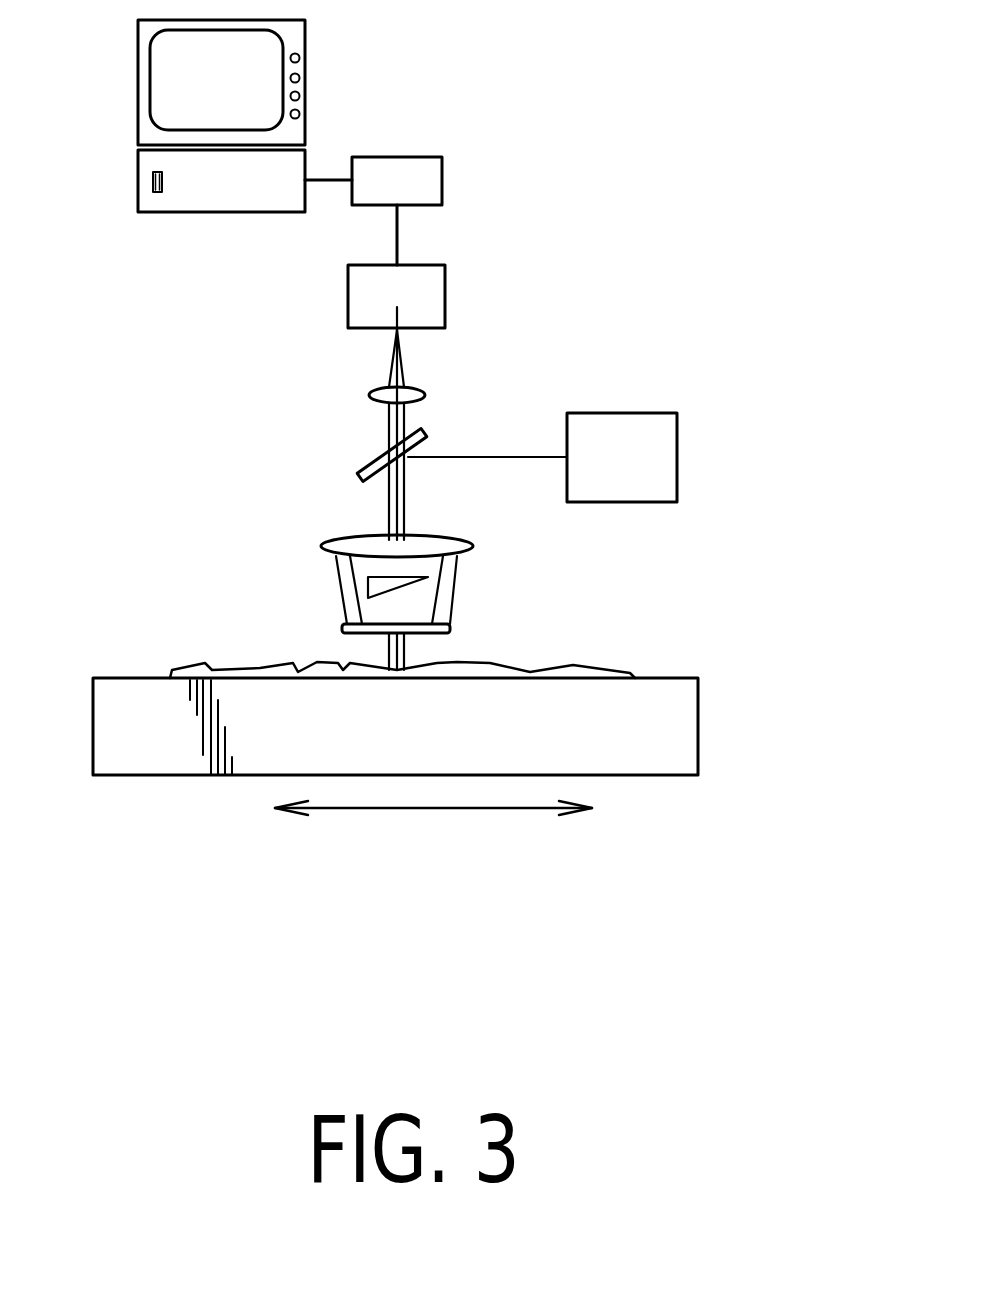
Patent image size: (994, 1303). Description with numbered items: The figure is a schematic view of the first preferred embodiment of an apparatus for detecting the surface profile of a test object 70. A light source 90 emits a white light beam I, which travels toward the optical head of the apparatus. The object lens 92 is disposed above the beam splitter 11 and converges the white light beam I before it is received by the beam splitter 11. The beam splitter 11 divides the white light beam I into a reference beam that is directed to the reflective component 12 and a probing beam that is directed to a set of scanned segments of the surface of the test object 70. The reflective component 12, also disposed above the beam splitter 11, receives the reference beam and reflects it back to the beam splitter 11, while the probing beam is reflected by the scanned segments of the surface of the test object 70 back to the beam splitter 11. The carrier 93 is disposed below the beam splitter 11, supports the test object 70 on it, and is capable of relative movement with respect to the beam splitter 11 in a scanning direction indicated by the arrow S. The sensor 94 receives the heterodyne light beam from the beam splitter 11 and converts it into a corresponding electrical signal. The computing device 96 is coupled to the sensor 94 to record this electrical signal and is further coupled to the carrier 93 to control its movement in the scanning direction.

The computing device 96 is at (173, 78).
The sensor 94 is at (362, 287).
The white light beam I is at (485, 457).
The light source 90 is at (662, 452).
The object lens 92 is at (347, 547).
The reflective component 12 is at (373, 585).
The beam splitter 11 is at (450, 628).
The test object 70 is at (577, 667).
The carrier 93 is at (675, 728).
The scanning direction arrow S is at (433, 808).